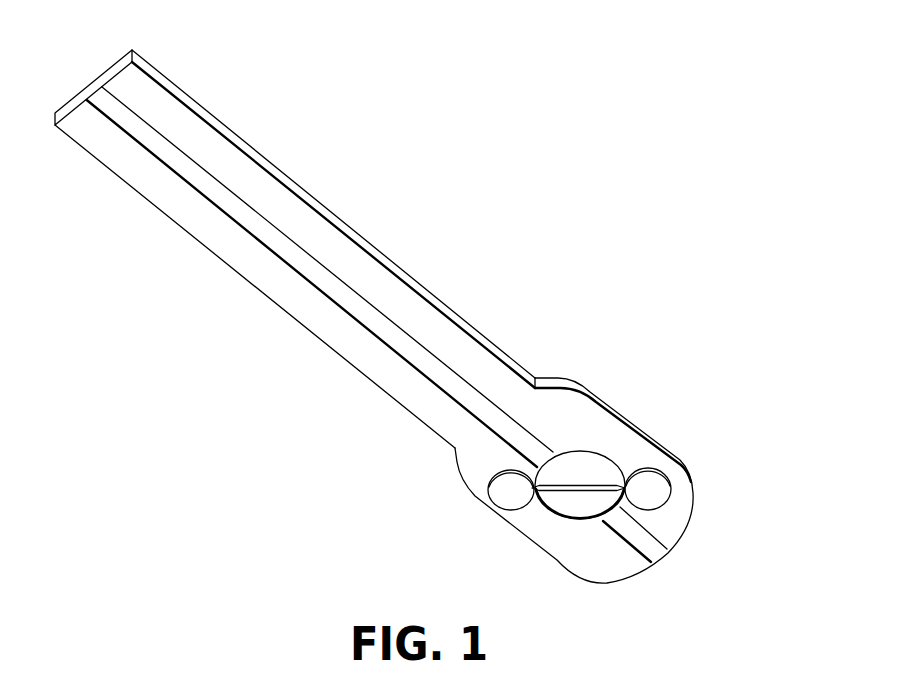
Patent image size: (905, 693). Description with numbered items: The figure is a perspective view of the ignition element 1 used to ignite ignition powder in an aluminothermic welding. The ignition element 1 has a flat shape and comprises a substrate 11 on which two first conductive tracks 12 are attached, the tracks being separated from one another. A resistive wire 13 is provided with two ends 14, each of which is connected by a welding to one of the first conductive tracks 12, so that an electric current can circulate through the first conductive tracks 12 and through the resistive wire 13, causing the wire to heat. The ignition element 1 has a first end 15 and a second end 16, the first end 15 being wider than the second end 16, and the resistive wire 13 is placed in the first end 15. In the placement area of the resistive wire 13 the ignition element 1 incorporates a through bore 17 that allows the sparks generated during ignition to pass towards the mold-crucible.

The ignition element 1 is at (322, 183).
The substrate 11 is at (405, 272).
The first conductive tracks 12 is at (237, 177).
The resistive wire 13 is at (600, 519).
The ends of the resistive wire 14 is at (535, 489).
The first end 15 is at (713, 493).
The second end 16 is at (83, 78).
The through bore 17 is at (563, 503).